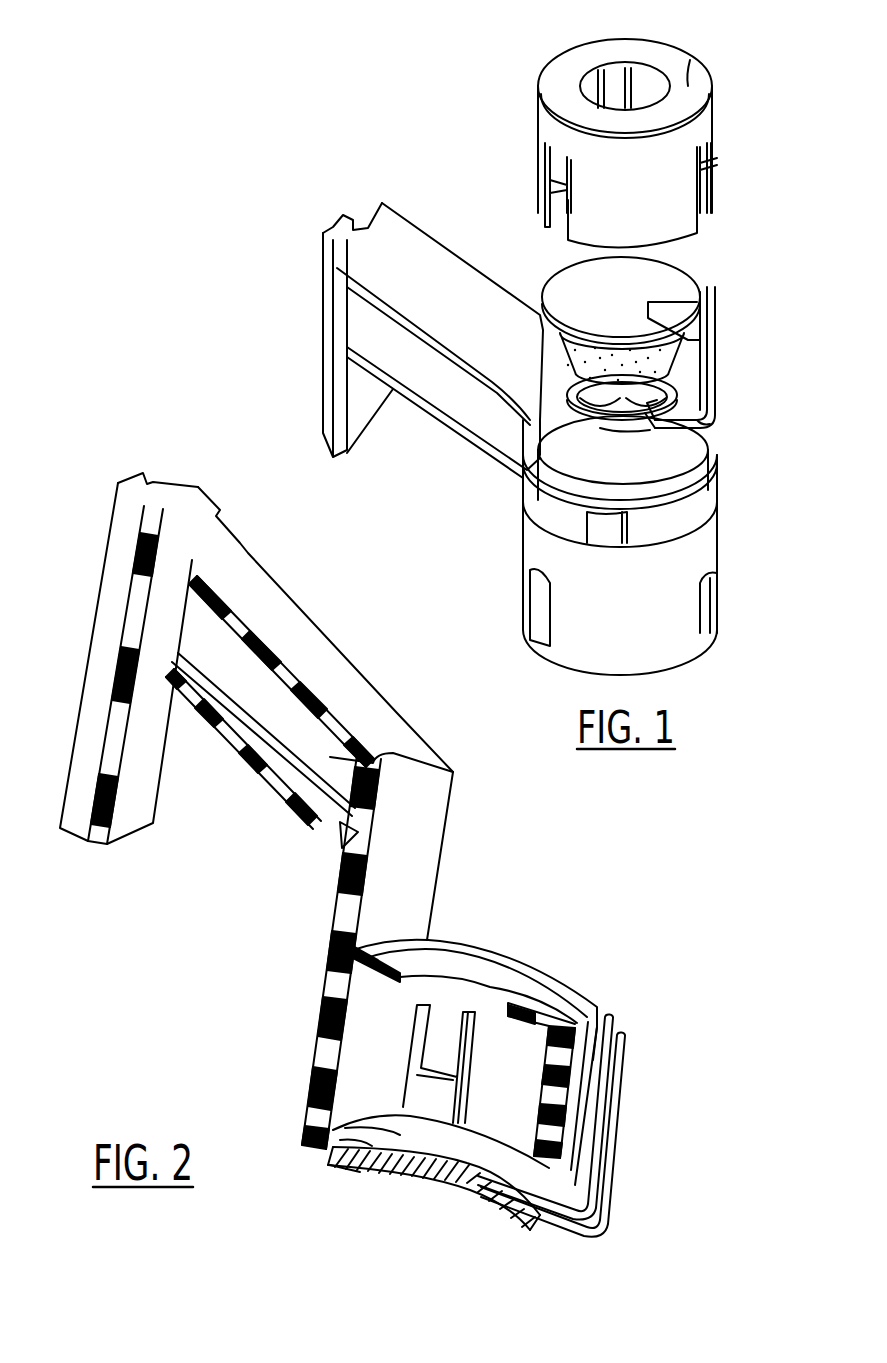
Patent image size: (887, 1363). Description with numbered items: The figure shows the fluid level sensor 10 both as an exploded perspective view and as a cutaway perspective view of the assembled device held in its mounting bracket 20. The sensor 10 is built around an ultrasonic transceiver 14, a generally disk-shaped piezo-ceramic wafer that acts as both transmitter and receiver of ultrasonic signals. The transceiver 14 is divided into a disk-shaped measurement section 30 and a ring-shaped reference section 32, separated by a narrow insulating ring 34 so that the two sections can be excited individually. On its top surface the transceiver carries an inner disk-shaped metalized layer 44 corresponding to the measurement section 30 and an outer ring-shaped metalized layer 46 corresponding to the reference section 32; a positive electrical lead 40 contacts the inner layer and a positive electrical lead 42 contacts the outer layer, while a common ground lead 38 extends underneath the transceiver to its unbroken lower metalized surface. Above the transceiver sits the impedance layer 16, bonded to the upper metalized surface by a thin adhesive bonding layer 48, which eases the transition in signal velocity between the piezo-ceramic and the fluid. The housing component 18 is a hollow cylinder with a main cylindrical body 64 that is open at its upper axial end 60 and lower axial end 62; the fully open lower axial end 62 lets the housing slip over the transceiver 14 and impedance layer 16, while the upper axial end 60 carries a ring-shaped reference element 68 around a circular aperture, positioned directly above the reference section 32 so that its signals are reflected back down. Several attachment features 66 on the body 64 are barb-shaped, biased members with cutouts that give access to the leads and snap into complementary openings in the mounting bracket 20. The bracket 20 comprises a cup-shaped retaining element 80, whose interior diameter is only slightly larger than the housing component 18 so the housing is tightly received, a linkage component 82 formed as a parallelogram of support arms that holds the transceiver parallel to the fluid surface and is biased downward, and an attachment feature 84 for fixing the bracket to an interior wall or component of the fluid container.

In FIG. 1, the fluid level sensor 10 is at (737, 68).
In FIG. 2, the fluid level sensor 10 is at (496, 829).
In FIG. 1, the ultrasonic transceiver 14 is at (706, 487).
In FIG. 2, the ultrasonic transceiver 14 is at (415, 1187).
In FIG. 1, the impedance layer 16 is at (690, 262).
In FIG. 2, the impedance layer 16 is at (363, 1110).
In FIG. 1, the housing component 18 is at (700, 131).
In FIG. 2, the housing component 18 is at (327, 1058).
In FIG. 1, the mounting bracket 20 is at (562, 550).
In FIG. 2, the mounting bracket 20 is at (390, 900).
In FIG. 1, the measurement section 30 is at (665, 392).
In FIG. 2, the measurement section 30 is at (390, 1115).
In FIG. 1, the reference section 32 is at (557, 357).
In FIG. 2, the reference section 32 is at (343, 1167).
In FIG. 1, the insulating ring 34 is at (633, 440).
In FIG. 2, the insulating ring 34 is at (362, 1172).
In FIG. 1, the common ground lead 38 is at (718, 300).
In FIG. 2, the common ground lead 38 is at (620, 1083).
In FIG. 1, the positive electrical lead 40 is at (716, 398).
In FIG. 2, the positive electrical lead 40 is at (594, 1167).
In FIG. 1, the positive electrical lead 42 is at (700, 386).
In FIG. 1, the inner disk-shaped metalized layer 44 is at (482, 392).
In FIG. 1, the outer ring-shaped metalized layer 46 is at (440, 385).
In FIG. 1, the bonding layer 48 is at (640, 353).
In FIG. 2, the bonding layer 48 is at (400, 1193).
In FIG. 1, the upper axial end 60 is at (548, 48).
In FIG. 1, the lower axial end 62 is at (742, 226).
In FIG. 1, the main cylindrical body 64 is at (622, 190).
In FIG. 1, the attachment features 66 is at (548, 183).
In FIG. 1, the ring-shaped reference element 68 is at (688, 85).
In FIG. 2, the ring-shaped reference element 68 is at (425, 952).
In FIG. 1, the cup-shaped retaining element 80 is at (597, 650).
In FIG. 2, the cup-shaped retaining element 80 is at (588, 1038).
In FIG. 1, the linkage component 82 is at (443, 258).
In FIG. 2, the linkage component 82 is at (273, 723).
In FIG. 1, the attachment feature 84 is at (323, 343).
In FIG. 2, the attachment feature 84 is at (120, 660).